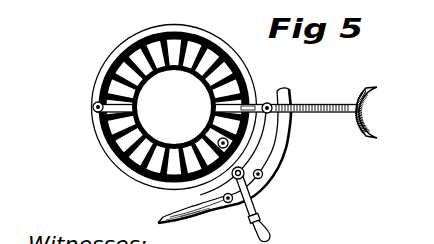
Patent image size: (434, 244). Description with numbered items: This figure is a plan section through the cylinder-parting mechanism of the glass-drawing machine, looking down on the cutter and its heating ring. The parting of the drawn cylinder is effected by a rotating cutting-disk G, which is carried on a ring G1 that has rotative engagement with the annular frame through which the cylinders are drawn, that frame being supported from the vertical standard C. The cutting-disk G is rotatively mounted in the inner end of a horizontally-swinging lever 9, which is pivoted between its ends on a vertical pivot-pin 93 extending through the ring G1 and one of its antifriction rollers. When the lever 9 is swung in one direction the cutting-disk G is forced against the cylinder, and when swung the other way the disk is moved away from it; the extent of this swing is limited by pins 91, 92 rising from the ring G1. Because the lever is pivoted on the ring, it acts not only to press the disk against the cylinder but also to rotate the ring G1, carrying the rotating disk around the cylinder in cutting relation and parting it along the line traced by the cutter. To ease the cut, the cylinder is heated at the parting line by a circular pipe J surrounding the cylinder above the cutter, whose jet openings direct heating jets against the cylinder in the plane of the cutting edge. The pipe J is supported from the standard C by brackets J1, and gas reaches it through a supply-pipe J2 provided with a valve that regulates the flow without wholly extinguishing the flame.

The circular pipe J is at (108, 133).
The brackets J1 is at (321, 103).
The supply-pipe J2 is at (93, 107).
The cutting-disk G is at (218, 138).
The ring G1 is at (168, 219).
The vertical standard C is at (374, 112).
The horizontally-swinging lever 9 is at (257, 200).
The pins 91 is at (263, 172).
The stop pin 92 is at (228, 204).
The vertical pivot-pin 93 is at (233, 178).